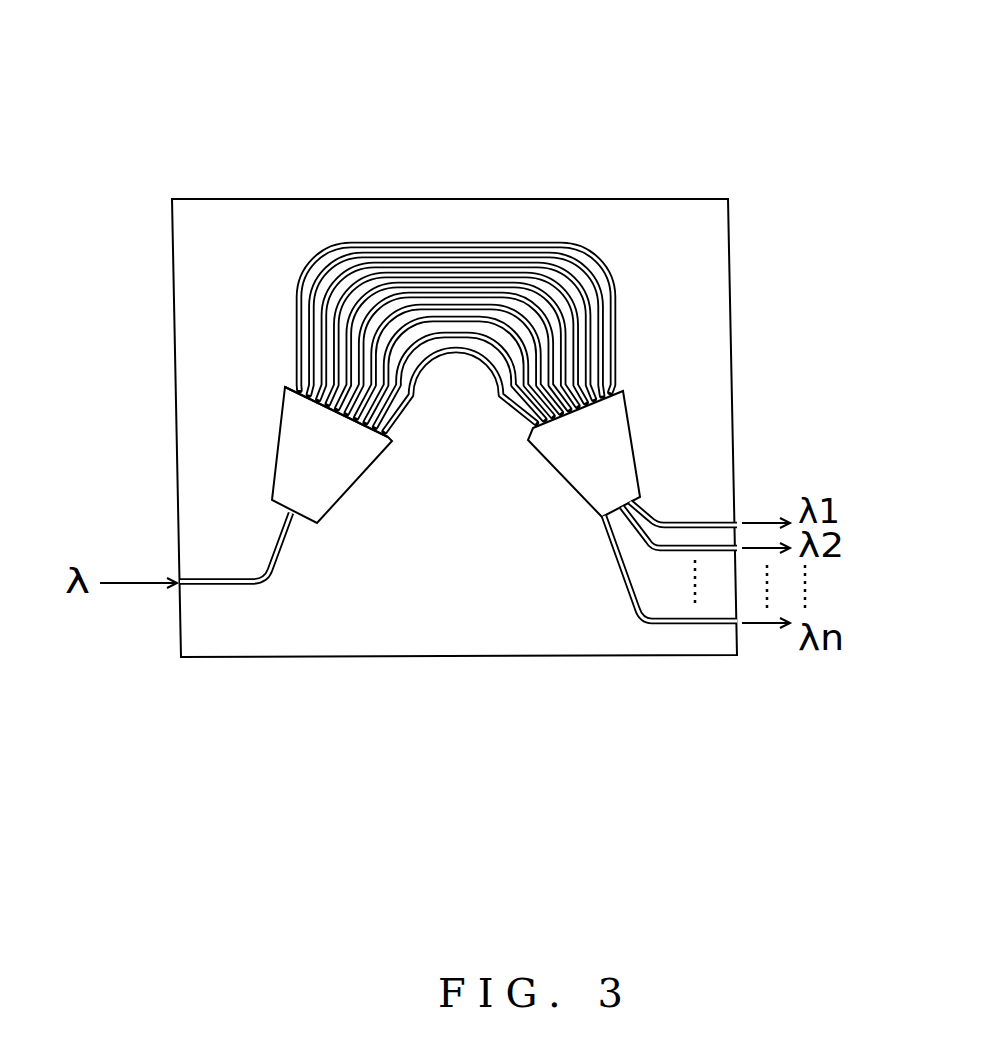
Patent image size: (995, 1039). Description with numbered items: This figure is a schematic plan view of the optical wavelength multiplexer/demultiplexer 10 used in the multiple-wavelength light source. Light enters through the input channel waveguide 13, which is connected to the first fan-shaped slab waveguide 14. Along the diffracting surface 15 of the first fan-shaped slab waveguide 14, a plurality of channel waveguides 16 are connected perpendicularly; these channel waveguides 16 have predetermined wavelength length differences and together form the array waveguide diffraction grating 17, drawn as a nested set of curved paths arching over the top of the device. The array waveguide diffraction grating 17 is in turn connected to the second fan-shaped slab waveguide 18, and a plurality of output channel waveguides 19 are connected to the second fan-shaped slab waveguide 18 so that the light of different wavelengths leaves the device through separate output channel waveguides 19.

The optical wavelength multiplexer/demultiplexer 10 is at (747, 208).
The input channel waveguide 13 is at (225, 583).
The first fan-shaped slab waveguide 14 is at (340, 478).
The diffracting surface 15 is at (315, 398).
The channel waveguides 16 is at (397, 242).
The array waveguide diffraction grating 17 is at (453, 240).
The second fan-shaped slab waveguide 18 is at (582, 467).
The output channel waveguides 19 is at (690, 625).